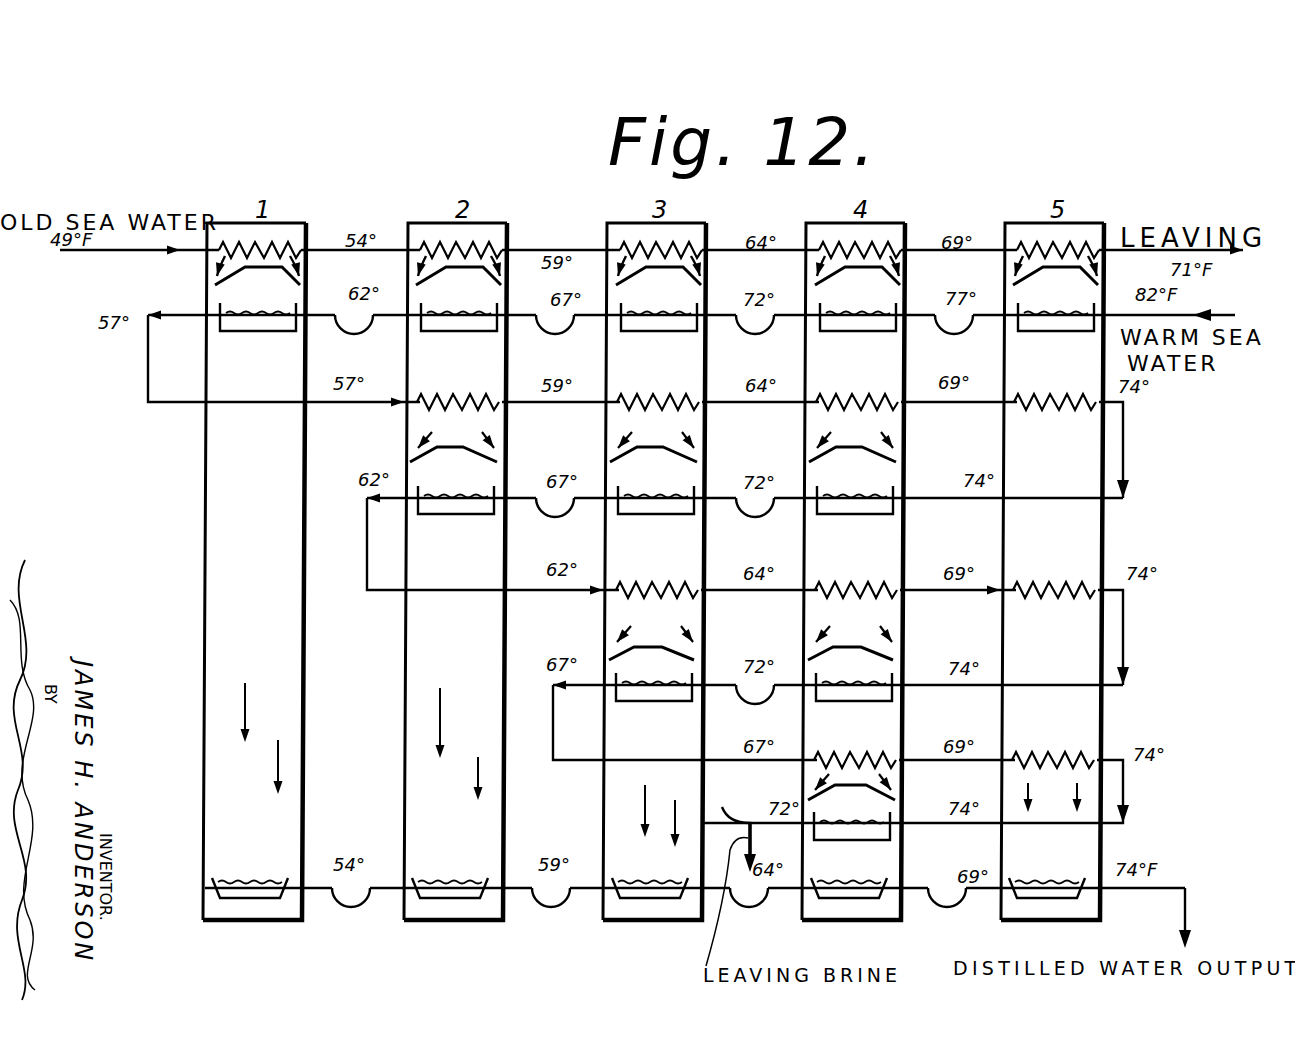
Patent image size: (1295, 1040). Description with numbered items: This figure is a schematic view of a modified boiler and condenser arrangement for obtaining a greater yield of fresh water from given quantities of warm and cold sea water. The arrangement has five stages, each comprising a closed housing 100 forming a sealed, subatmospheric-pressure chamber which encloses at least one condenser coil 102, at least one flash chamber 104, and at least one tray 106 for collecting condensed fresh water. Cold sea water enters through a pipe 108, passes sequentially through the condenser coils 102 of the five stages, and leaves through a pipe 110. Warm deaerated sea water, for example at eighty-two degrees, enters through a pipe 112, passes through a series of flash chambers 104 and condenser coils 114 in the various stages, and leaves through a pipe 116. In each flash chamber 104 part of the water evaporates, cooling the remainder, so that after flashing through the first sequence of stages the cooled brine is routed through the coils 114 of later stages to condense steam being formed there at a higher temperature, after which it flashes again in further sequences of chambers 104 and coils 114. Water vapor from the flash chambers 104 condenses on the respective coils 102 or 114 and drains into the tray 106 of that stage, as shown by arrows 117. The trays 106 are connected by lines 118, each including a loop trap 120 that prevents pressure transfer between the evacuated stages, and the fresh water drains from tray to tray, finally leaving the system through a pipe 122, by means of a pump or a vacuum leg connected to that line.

The closed housing 100 is at (305, 716).
The condenser coil 102 is at (296, 237).
The flash chamber 104 is at (284, 340).
The tray 106 is at (270, 874).
The pipe 108 is at (126, 252).
The pipe 110 is at (1110, 258).
The pipe 112 is at (1183, 313).
The condenser coil 114 is at (434, 393).
The pipe 116 is at (729, 875).
The arrows 117 is at (245, 708).
The lines 118 is at (392, 889).
The loop trap 120 is at (345, 907).
The pipe 122 is at (1184, 909).